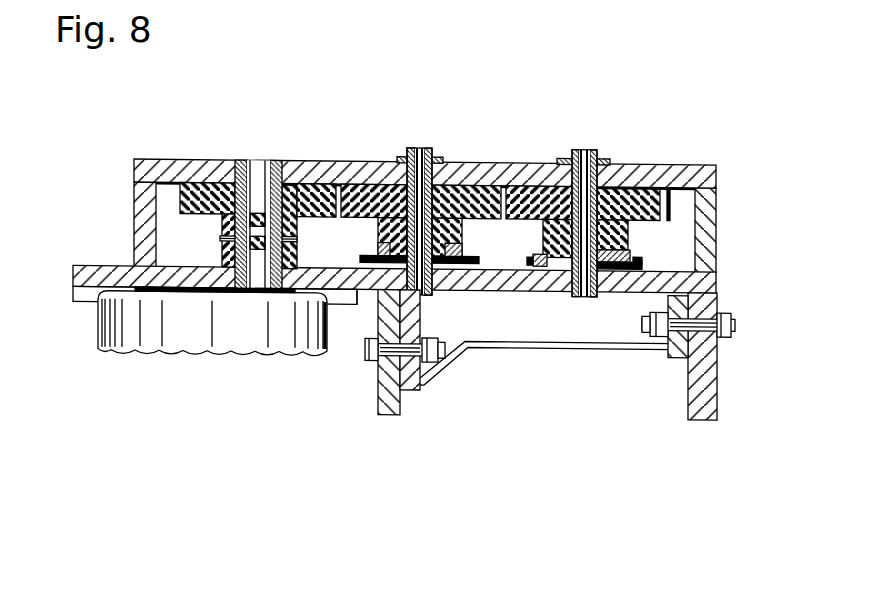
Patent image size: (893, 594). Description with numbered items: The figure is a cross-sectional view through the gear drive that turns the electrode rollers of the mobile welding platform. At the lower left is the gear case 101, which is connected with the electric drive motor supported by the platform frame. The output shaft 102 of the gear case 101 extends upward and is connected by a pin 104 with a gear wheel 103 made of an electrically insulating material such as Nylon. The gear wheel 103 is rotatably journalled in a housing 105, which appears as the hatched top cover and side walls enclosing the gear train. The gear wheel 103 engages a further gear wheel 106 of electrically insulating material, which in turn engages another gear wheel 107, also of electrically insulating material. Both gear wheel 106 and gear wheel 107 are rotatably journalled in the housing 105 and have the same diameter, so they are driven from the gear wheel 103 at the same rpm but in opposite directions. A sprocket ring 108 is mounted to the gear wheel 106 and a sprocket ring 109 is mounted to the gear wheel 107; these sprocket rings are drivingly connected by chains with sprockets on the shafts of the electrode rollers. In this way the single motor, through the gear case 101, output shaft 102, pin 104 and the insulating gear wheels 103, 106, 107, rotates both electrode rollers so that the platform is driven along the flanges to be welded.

The gear case 101 is at (158, 352).
The output shaft 102 is at (255, 295).
The gear wheel 103 is at (207, 216).
The pin 104 is at (222, 240).
The housing 105 is at (321, 164).
The gear wheel 106 is at (369, 218).
The gear wheel 107 is at (538, 220).
The sprocket ring 108 is at (466, 264).
The sprocket ring 109 is at (627, 261).